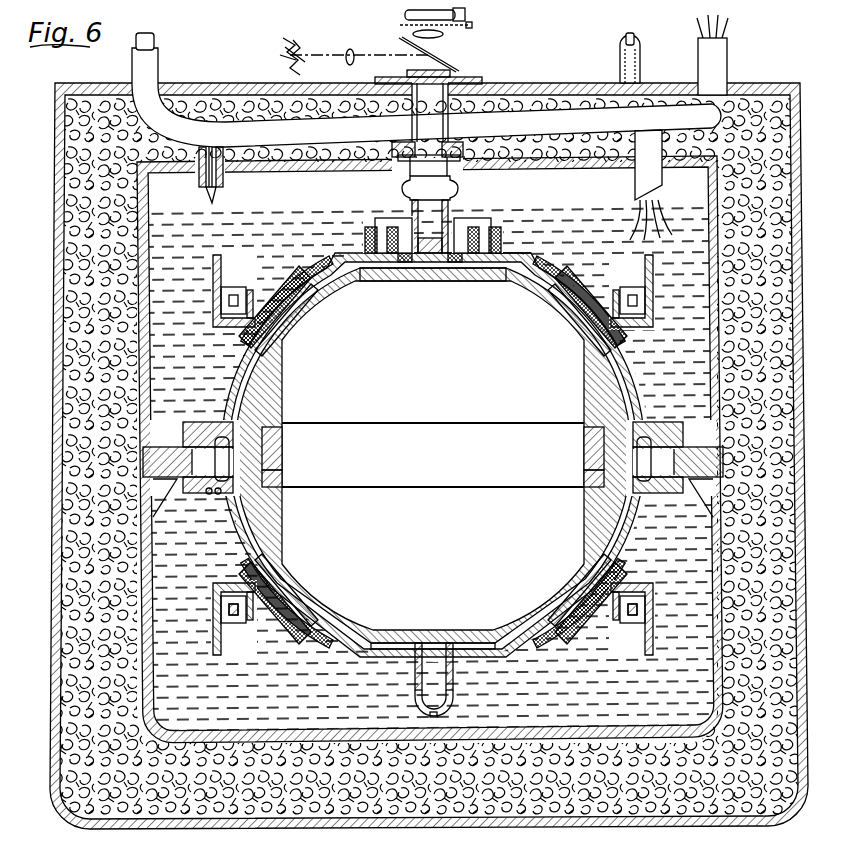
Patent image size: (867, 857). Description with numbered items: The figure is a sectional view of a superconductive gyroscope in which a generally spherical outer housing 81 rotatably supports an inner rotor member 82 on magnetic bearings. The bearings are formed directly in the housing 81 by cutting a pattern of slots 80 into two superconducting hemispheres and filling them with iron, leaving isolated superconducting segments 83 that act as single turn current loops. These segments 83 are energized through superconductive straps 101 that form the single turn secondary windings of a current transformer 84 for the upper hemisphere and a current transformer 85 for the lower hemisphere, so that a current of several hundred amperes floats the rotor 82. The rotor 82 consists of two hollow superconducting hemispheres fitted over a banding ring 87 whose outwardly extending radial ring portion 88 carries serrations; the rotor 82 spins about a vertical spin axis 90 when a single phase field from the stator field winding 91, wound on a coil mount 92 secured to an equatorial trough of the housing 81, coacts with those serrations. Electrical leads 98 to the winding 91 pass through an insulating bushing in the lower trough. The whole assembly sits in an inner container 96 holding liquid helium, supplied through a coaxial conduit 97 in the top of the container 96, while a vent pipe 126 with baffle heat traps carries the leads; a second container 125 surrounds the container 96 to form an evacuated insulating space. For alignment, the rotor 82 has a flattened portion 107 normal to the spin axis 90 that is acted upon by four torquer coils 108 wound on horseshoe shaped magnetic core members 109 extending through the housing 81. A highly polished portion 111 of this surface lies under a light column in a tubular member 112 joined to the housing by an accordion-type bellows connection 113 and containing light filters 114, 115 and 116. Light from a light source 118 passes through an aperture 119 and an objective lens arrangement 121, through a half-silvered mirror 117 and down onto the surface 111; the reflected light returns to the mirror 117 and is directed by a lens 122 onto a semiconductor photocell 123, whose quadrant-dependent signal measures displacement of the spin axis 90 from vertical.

The slots 80 is at (335, 265).
The outer housing 81 is at (506, 256).
The inner rotor member 82 is at (526, 290).
The superconducting segments 83 is at (310, 262).
The current transformer 84 is at (236, 273).
The current transformer 85 is at (240, 645).
The banding ring 87 is at (287, 428).
The radial ring portion 88 is at (290, 455).
The spin axis 90 is at (442, 201).
The stator field winding 91 is at (220, 427).
The coil mount 92 is at (190, 436).
The inner container 96 is at (148, 600).
The coaxial conduit 97 is at (286, 135).
The electrical leads 98 is at (210, 495).
The superconductive straps 101 is at (245, 338).
The flattened portion 107 is at (396, 276).
The torquer coils 108 is at (368, 238).
The horseshoe shaped magnetic core member 109 is at (389, 222).
The highly polished portion 111 is at (436, 281).
The tubular member 112 is at (448, 125).
The accordion-type bellows connection 113 is at (455, 183).
The light filter 114 is at (429, 240).
The light filter 115 is at (405, 148).
The light filter 116 is at (460, 75).
The half-silvered mirror 117 is at (442, 58).
The light source 118 is at (466, 15).
The aperture 119 is at (473, 27).
The objective lens arrangement 121 is at (444, 36).
The lens 122 is at (360, 45).
The semiconductor photocell 123 is at (285, 55).
The second container 125 is at (792, 567).
The vent pipe 126 is at (727, 52).